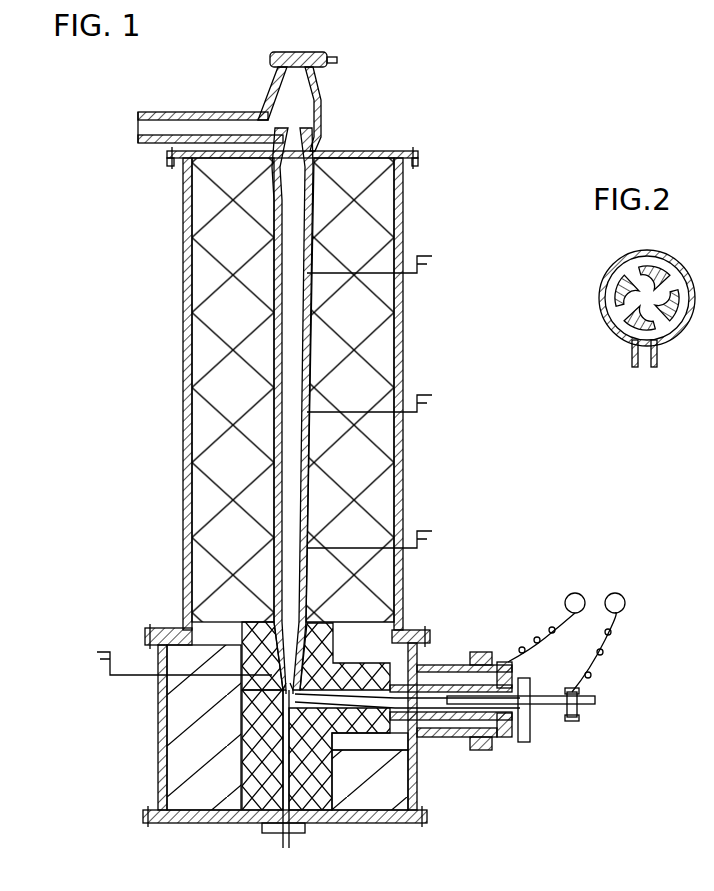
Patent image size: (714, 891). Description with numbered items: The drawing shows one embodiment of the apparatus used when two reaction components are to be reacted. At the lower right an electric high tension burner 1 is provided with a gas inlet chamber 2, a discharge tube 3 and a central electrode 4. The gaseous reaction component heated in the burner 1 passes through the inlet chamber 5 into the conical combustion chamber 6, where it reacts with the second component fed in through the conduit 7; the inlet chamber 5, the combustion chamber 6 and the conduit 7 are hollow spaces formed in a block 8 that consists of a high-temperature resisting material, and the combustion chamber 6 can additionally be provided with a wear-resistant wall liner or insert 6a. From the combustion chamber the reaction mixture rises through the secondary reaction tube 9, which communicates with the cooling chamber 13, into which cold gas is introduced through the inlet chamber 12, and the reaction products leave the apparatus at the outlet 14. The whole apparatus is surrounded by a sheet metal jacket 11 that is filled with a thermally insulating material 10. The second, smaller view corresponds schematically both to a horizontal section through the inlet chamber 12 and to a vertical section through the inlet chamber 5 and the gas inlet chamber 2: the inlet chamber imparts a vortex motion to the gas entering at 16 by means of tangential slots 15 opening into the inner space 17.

In FIG. 1, the electric high tension burner 1 is at (432, 695).
In FIG. 1, the gas inlet chamber 2 is at (527, 728).
In FIG. 1, the discharge tube 3 is at (495, 745).
In FIG. 1, the central electrode 4 is at (558, 700).
In FIG. 1, the inlet chamber 5 is at (325, 748).
In FIG. 1, the conical combustion chamber 6 is at (285, 650).
In FIG. 1, the wear-resistant wall liner or insert 6a is at (283, 690).
In FIG. 1, the conduit 7 is at (296, 805).
In FIG. 1, the block 8 is at (268, 792).
In FIG. 1, the secondary reaction tube 9 is at (275, 351).
In FIG. 1, the thermally insulating material 10 is at (210, 301).
In FIG. 1, the sheet metal jacket 11 is at (185, 251).
In FIG. 1, the inlet chamber 12 is at (271, 60).
In FIG. 1, the cooling chamber 13 is at (285, 102).
In FIG. 1, the outlet 14 is at (186, 123).
In FIG. 2, the tangential slots 15 is at (612, 312).
In FIG. 2, the gas entry 16 is at (632, 357).
In FIG. 2, the inner space 17 is at (640, 293).